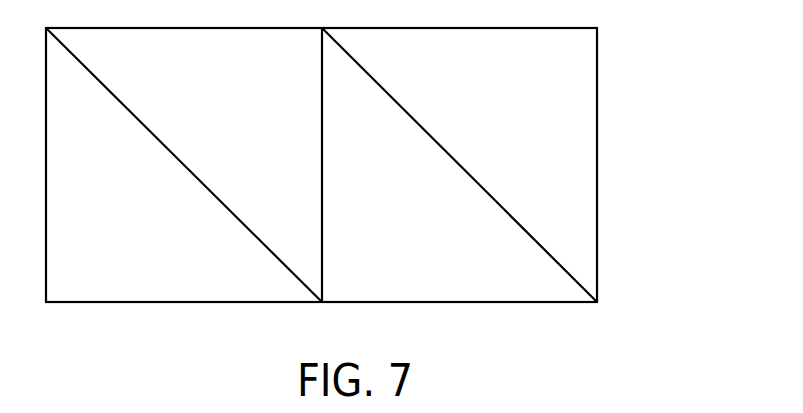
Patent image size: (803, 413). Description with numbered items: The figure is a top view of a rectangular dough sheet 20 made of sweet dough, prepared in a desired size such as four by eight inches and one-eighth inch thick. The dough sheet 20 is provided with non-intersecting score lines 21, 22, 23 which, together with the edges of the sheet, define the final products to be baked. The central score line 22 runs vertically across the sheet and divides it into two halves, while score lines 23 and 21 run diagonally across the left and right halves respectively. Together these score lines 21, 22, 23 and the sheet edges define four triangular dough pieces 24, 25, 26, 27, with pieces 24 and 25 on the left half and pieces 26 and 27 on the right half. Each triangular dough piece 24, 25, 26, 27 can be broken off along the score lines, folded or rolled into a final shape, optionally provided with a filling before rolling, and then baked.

The dough sheet 20 is at (632, 163).
The score line 21 is at (443, 150).
The score line 22 is at (323, 205).
The score line 23 is at (182, 162).
The triangular dough piece 24 is at (112, 272).
The triangular dough piece 25 is at (283, 79).
The triangular dough piece 26 is at (459, 282).
The triangular dough piece 27 is at (564, 79).